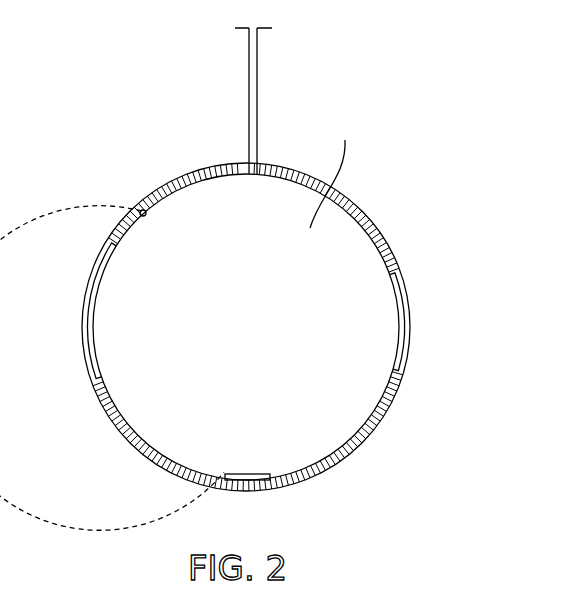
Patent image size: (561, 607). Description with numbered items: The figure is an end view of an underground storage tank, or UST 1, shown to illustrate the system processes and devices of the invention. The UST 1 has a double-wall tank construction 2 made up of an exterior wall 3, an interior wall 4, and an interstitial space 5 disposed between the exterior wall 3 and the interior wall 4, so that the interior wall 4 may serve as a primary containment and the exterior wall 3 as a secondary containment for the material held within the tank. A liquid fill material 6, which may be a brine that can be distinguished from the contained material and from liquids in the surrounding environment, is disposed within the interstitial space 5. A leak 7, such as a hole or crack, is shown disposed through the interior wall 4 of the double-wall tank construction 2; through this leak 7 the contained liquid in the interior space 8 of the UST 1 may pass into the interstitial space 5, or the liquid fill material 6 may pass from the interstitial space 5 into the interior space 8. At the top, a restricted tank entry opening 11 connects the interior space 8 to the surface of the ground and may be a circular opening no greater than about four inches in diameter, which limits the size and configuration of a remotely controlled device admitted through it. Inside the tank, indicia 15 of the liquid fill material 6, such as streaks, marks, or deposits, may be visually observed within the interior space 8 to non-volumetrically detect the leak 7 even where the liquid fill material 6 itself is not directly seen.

The UST 1 is at (422, 213).
The double-wall tank construction 2 is at (100, 447).
The exterior wall 3 is at (392, 418).
The interior wall 4 is at (394, 372).
The interstitial space 5 is at (405, 325).
The liquid fill material 6 is at (250, 472).
The leak 7 is at (146, 213).
The interior space 8 is at (330, 169).
The restricted tank entry opening 11 is at (258, 48).
The indicia 15 is at (112, 377).